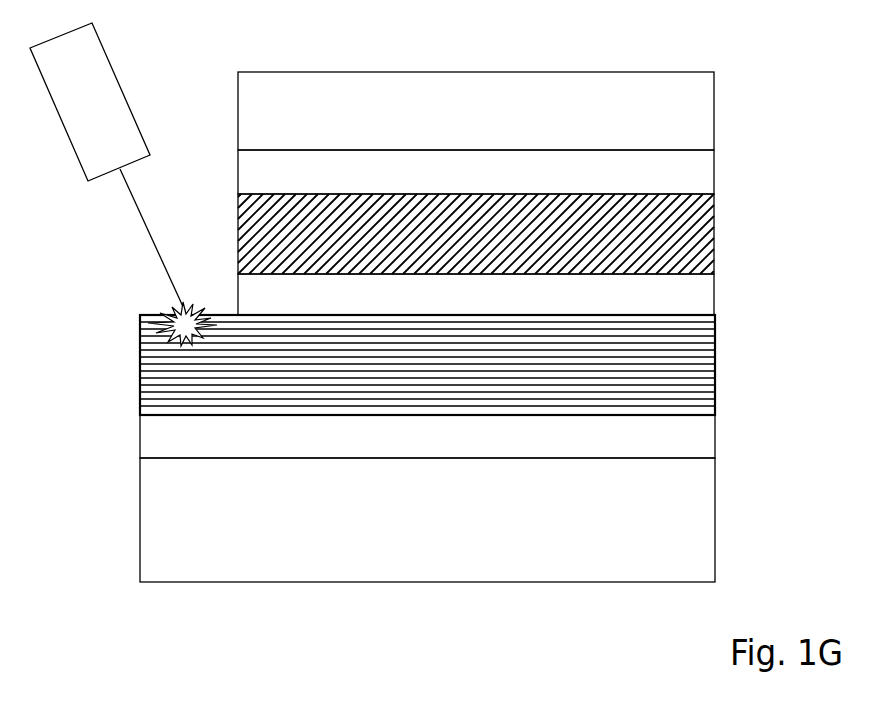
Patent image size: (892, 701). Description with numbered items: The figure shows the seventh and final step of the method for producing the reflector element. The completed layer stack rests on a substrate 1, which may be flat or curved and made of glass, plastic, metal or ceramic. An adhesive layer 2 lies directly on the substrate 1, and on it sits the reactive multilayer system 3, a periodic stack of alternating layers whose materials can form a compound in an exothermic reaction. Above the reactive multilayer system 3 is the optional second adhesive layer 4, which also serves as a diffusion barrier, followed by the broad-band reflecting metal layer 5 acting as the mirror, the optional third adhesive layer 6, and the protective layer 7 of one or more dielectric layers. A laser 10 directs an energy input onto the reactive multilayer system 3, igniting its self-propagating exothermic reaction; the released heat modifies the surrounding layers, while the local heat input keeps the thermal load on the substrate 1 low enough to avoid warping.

The substrate 1 is at (692, 527).
The adhesive layer 2 is at (692, 438).
The reactive multilayer system 3 is at (693, 360).
The second adhesive layer 4 is at (692, 295).
The metal layer 5 is at (700, 227).
The third adhesive layer 6 is at (692, 174).
The protective layer 7 is at (692, 117).
The laser 10 is at (96, 73).